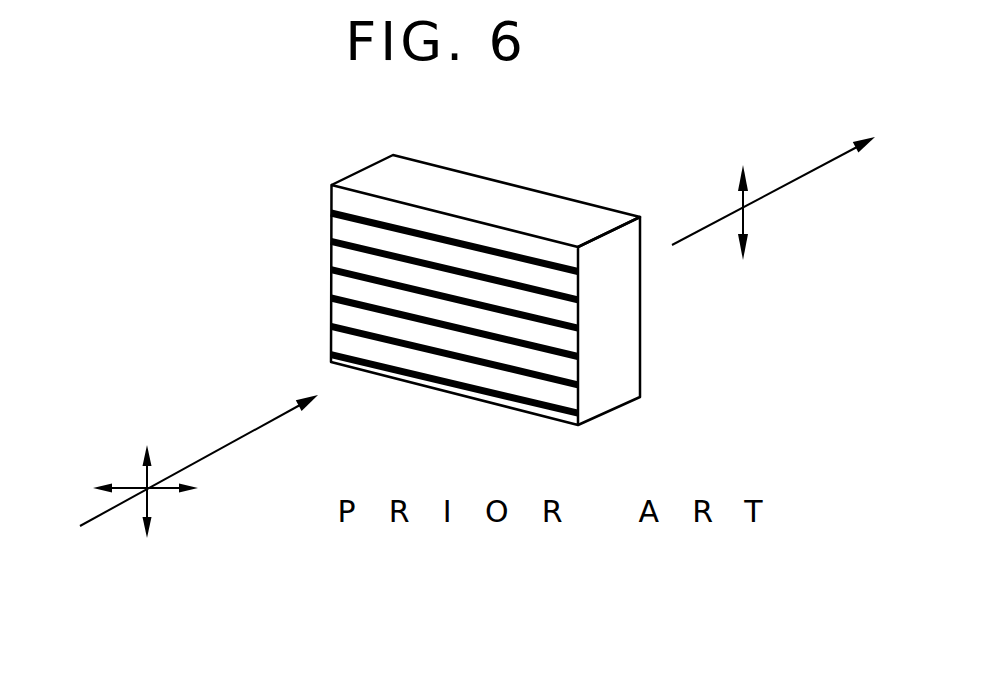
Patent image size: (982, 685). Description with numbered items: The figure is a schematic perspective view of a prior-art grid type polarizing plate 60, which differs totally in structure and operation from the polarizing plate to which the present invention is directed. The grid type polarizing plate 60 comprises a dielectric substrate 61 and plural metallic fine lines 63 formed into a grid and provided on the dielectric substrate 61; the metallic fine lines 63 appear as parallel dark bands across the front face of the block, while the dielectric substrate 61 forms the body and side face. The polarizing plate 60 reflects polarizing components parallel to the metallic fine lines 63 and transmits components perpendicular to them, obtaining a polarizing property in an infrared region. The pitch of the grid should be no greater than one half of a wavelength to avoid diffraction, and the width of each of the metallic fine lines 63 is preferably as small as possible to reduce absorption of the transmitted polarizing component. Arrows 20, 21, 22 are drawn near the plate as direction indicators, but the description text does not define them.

The grid type polarizing plate 60 is at (477, 258).
The dielectric substrate 61 is at (615, 324).
The metallic fine lines 63 is at (331, 213).
The propagation direction arrow 20 is at (182, 479).
The horizontal polarization direction arrow 21 is at (167, 487).
The vertical polarization direction arrow 22 is at (148, 471).